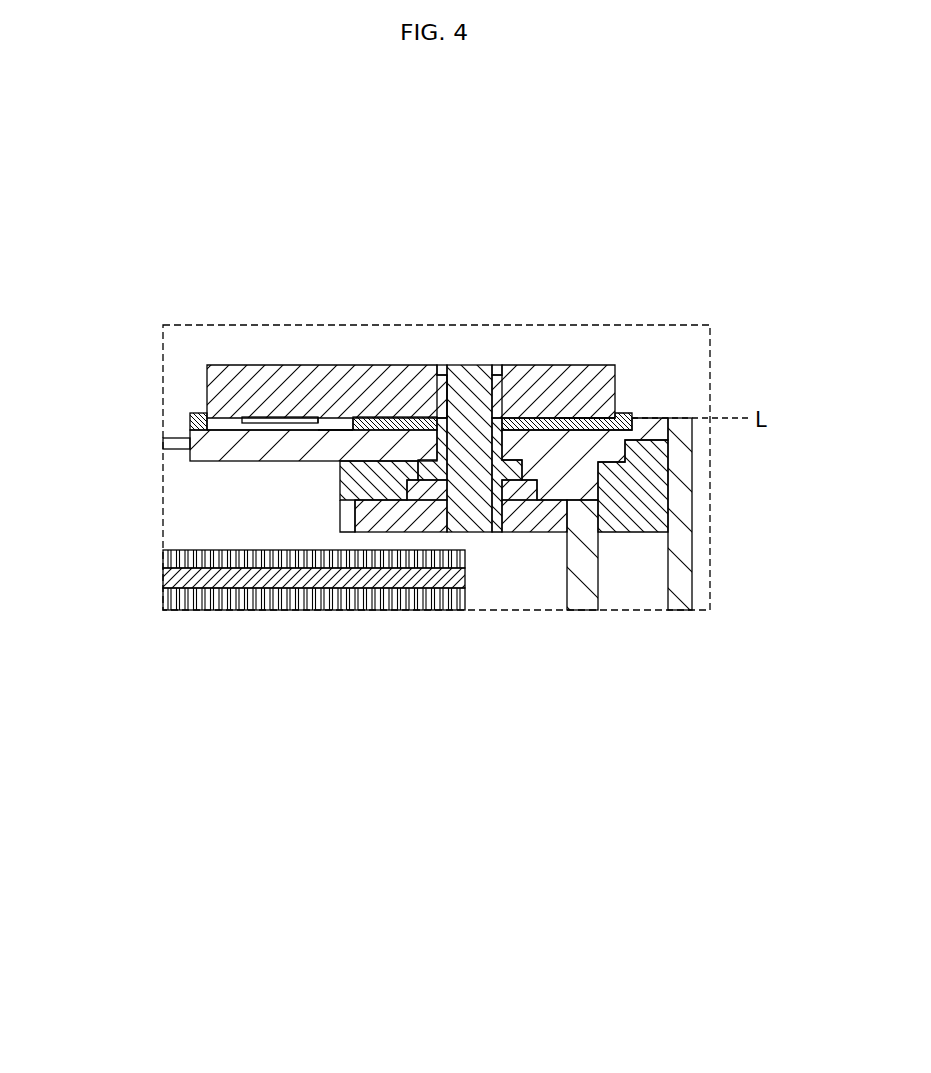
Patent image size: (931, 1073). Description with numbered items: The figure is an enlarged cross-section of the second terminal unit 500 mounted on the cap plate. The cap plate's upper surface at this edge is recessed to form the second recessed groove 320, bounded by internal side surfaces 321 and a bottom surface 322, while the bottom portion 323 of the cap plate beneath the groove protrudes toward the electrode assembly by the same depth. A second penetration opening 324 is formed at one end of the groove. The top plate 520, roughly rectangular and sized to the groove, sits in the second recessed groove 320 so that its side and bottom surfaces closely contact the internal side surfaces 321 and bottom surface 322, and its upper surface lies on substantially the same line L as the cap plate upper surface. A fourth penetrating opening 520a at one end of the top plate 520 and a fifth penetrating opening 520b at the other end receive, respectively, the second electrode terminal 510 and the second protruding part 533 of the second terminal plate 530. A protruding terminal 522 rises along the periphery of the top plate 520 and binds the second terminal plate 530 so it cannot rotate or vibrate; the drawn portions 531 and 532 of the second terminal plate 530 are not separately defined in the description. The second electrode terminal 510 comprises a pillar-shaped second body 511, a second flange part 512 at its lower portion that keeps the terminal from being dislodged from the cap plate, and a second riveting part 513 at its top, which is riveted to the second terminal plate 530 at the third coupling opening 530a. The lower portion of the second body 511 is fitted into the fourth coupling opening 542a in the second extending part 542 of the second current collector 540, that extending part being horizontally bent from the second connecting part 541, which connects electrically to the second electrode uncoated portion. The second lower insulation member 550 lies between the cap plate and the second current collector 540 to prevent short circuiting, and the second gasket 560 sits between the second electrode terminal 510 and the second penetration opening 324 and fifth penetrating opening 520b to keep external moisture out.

The second terminal unit 500 is at (110, 283).
The second electrode terminal 510 is at (615, 270).
The second body 511 is at (506, 396).
The second flange part 512 is at (578, 415).
The second riveting part 513 is at (497, 372).
The top plate 520 is at (585, 462).
The fourth penetrating opening 520a is at (470, 413).
The fifth penetrating opening 520b is at (332, 420).
The protruding terminal 522 is at (622, 412).
The second terminal plate 530 is at (288, 372).
The third coupling opening 530a is at (455, 392).
The holder side portion 531 is at (204, 394).
The holder pad 532 is at (365, 417).
The second protruding part 533 is at (248, 417).
The second recessed groove 320 is at (85, 437).
The internal side surfaces 321 is at (190, 444).
The bottom surface 322 is at (330, 427).
The bottom portion 323 is at (355, 466).
The second penetration opening 324 is at (367, 510).
The second current collector 540 is at (783, 512).
The second connecting part 541 is at (590, 572).
The second extending part 542 is at (560, 517).
The fourth coupling opening 542a is at (485, 525).
The second lower insulation member 550 is at (648, 480).
The second gasket 560 is at (496, 525).